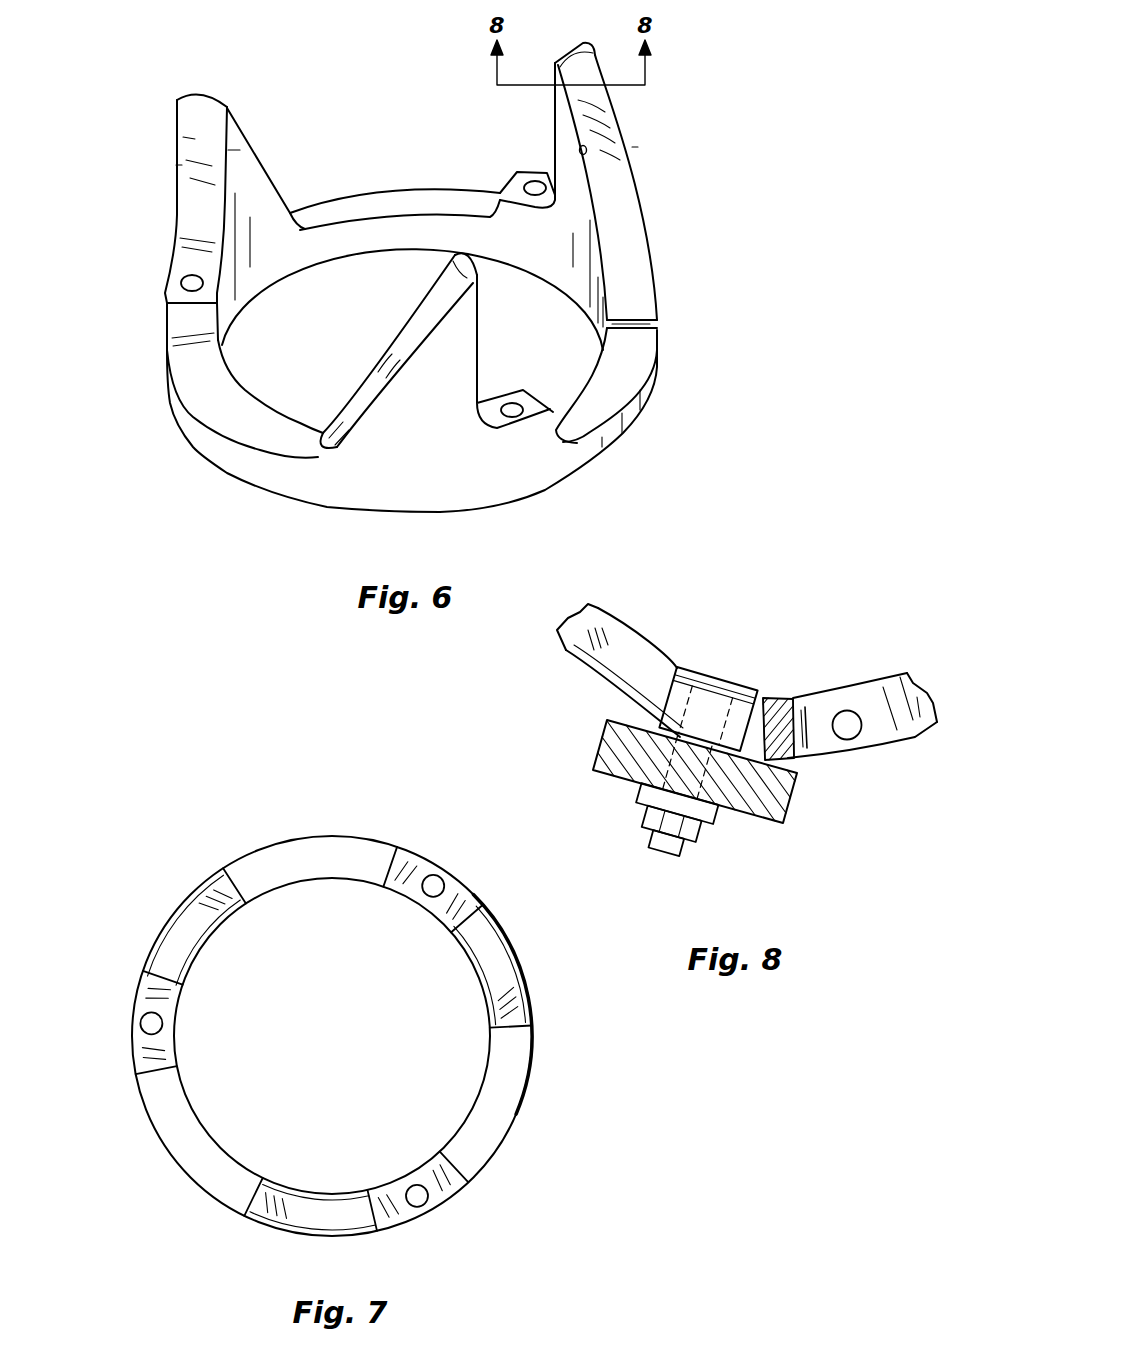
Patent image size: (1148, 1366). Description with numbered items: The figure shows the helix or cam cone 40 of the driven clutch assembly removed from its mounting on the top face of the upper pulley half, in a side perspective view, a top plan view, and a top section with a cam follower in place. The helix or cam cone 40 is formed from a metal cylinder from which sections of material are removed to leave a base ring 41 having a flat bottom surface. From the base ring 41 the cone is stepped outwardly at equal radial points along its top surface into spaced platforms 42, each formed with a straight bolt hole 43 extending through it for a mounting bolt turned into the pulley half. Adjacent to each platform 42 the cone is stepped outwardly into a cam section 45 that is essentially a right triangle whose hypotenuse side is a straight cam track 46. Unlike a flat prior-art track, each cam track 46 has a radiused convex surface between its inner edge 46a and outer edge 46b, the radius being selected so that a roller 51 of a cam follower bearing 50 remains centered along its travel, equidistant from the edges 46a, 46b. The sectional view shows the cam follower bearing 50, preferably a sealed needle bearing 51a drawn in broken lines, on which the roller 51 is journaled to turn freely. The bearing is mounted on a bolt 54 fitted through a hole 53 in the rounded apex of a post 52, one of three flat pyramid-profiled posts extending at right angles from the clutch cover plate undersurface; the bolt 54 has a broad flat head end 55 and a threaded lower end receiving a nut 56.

In FIG. 6, the helix or cam cone 40 is at (700, 297).
In FIG. 6, the base ring 41 is at (633, 413).
In FIG. 8, the base ring 41 is at (563, 640).
In FIG. 7, the base ring 41 is at (310, 860).
In FIG. 6, the platform 42 is at (182, 321).
In FIG. 8, the platform 42 is at (868, 740).
In FIG. 7, the platform 42 is at (462, 878).
In FIG. 6, the bolt hole 43 is at (183, 281).
In FIG. 8, the bolt hole 43 is at (848, 712).
In FIG. 7, the bolt hole 43 is at (436, 876).
In FIG. 6, the cam section 45 is at (416, 274).
In FIG. 6, the cam track 46 is at (242, 127).
In FIG. 8, the cam track 46 is at (780, 705).
In FIG. 7, the cam track 46 is at (190, 915).
In FIG. 6, the inner edge of cam track 46a is at (230, 150).
In FIG. 8, the inner edge of cam track 46a is at (773, 700).
In FIG. 7, the inner edge of cam track 46a is at (207, 946).
In FIG. 6, the outer edge of cam track 46b is at (175, 163).
In FIG. 8, the outer edge of cam track 46b is at (795, 760).
In FIG. 7, the outer edge of cam track 46b is at (168, 920).
In FIG. 8, the cam follower bearing 50 is at (722, 857).
In FIG. 8, the roller 51 is at (690, 668).
In FIG. 8, the sealed needle bearing 51a is at (735, 660).
In FIG. 8, the post 52 is at (615, 740).
In FIG. 8, the hole 53 is at (622, 786).
In FIG. 8, the bolt 54 is at (655, 850).
In FIG. 8, the broad flat head end 55 is at (717, 672).
In FIG. 8, the nut 56 is at (680, 838).